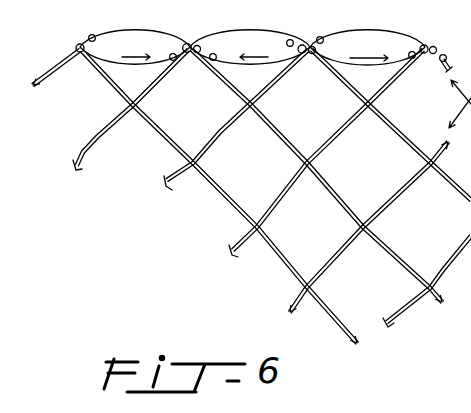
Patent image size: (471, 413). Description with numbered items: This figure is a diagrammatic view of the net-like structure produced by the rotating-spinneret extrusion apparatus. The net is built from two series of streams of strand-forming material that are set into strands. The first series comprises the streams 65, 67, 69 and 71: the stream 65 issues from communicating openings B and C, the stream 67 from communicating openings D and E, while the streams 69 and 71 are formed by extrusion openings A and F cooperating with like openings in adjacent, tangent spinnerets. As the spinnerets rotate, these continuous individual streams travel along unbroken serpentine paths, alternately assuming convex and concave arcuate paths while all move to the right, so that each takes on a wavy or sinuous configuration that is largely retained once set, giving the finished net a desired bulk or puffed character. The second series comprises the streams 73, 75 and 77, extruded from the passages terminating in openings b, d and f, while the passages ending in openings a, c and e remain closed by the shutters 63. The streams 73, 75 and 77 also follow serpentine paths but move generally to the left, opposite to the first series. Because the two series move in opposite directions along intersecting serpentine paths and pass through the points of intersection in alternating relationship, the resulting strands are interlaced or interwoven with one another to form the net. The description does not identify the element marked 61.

The knitted fabric structure 61 is at (427, 45).
The shutters 63 is at (466, 166).
The stream of strand-forming material 65 is at (170, 75).
The stream of strand-forming material 67 is at (292, 65).
The stream of strand-forming material 69 is at (57, 67).
The stream of strand-forming material 71 is at (395, 78).
The stream of strand-forming material 73 is at (232, 84).
The stream of strand-forming material 75 is at (340, 80).
The stream of strand-forming material 77 is at (441, 63).